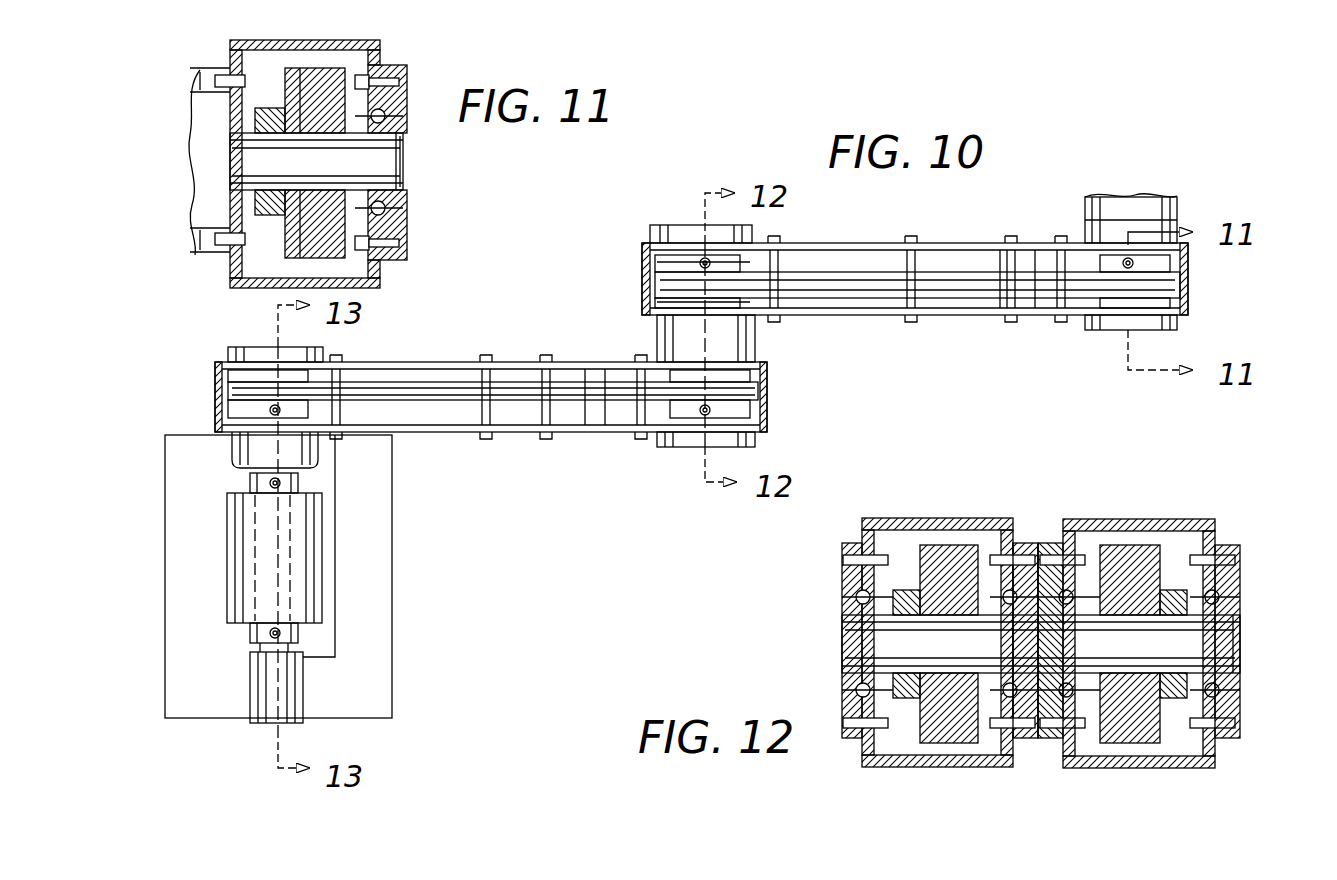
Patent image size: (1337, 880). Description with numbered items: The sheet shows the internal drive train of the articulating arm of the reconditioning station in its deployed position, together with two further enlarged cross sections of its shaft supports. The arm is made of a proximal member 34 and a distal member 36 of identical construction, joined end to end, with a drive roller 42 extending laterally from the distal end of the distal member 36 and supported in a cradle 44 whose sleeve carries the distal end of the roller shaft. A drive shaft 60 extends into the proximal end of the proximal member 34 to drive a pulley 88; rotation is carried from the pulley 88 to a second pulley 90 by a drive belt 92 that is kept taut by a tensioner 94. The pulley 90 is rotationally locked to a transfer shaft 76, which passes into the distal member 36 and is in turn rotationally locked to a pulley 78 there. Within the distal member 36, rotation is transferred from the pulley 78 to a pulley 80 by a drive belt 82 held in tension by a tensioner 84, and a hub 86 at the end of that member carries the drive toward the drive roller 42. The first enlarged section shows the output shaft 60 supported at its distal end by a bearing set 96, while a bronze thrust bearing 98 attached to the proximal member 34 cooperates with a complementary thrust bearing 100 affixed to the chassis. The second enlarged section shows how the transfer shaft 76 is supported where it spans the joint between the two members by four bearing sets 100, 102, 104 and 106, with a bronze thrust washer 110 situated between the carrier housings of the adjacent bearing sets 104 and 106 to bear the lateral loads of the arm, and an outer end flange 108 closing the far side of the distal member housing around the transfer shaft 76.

In FIG. 11, the proximal member 34 is at (232, 43).
In FIG. 10, the proximal member 34 is at (970, 244).
In FIG. 12, the proximal member 34 is at (988, 518).
In FIG. 10, the distal member 36 is at (548, 363).
In FIG. 12, the distal member 36 is at (1178, 519).
In FIG. 10, the drive roller 42 is at (300, 550).
In FIG. 10, the cradle 44 is at (380, 612).
In FIG. 11, the drive shaft 60 is at (385, 160).
In FIG. 10, the drive shaft 60 is at (1188, 284).
In FIG. 10, the transfer shaft 76 is at (722, 348).
In FIG. 12, the transfer shaft 76 is at (1228, 634).
In FIG. 10, the pulley 78 is at (745, 405).
In FIG. 12, the pulley 78 is at (1163, 572).
In FIG. 10, the pulley 80 is at (238, 400).
In FIG. 10, the drive belt 82 is at (542, 392).
In FIG. 12, the drive belt 82 is at (1130, 545).
In FIG. 10, the tensioner 84 is at (586, 413).
In FIG. 10, the hub 86 is at (290, 452).
In FIG. 11, the pulley 88 is at (368, 76).
In FIG. 10, the pulley 88 is at (1093, 332).
In FIG. 10, the pulley 90 is at (668, 265).
In FIG. 12, the pulley 90 is at (908, 545).
In FIG. 11, the drive belt 92 is at (342, 75).
In FIG. 10, the drive belt 92 is at (892, 292).
In FIG. 12, the drive belt 92 is at (940, 545).
In FIG. 10, the tensioner 94 is at (1010, 312).
In FIG. 11, the bearing set 96 is at (395, 218).
In FIG. 10, the bearing set 96 is at (1168, 332).
In FIG. 11, the bronze thrust bearing 98 is at (200, 138).
In FIG. 10, the bronze thrust bearing 98 is at (1177, 225).
In FIG. 10, the thrust bearing 100 is at (1178, 205).
In FIG. 12, the bearing set 102 is at (852, 740).
In FIG. 12, the bearing set 104 is at (1020, 740).
In FIG. 12, the bearing set 106 is at (1052, 740).
In FIG. 12, the end flange 108 is at (1228, 740).
In FIG. 12, the bronze thrust washer 110 is at (1040, 545).